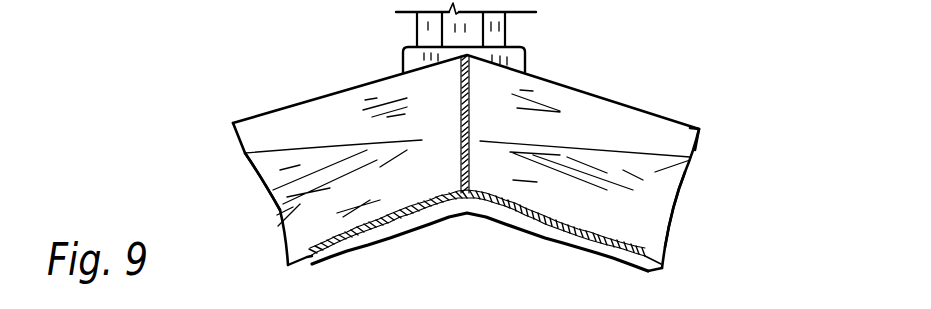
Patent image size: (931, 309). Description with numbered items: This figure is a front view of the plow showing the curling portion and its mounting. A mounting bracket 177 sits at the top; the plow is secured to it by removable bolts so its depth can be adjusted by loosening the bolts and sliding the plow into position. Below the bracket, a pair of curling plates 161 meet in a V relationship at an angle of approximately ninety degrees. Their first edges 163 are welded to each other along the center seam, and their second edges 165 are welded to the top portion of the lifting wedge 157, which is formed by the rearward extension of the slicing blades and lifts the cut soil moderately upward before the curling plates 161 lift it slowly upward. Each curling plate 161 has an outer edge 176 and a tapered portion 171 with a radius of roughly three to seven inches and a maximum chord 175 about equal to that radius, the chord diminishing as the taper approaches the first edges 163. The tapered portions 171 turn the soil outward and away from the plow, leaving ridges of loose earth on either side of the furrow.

The lifting wedge 157 is at (667, 246).
The curling plates 161 is at (275, 132).
The first edges 163 is at (468, 148).
The second edges 165 is at (541, 228).
The concave tapered portion 171 is at (278, 226).
The maximum chord 175 is at (265, 188).
The outer edge 176 is at (700, 135).
The mounting bracket 177 is at (414, 60).